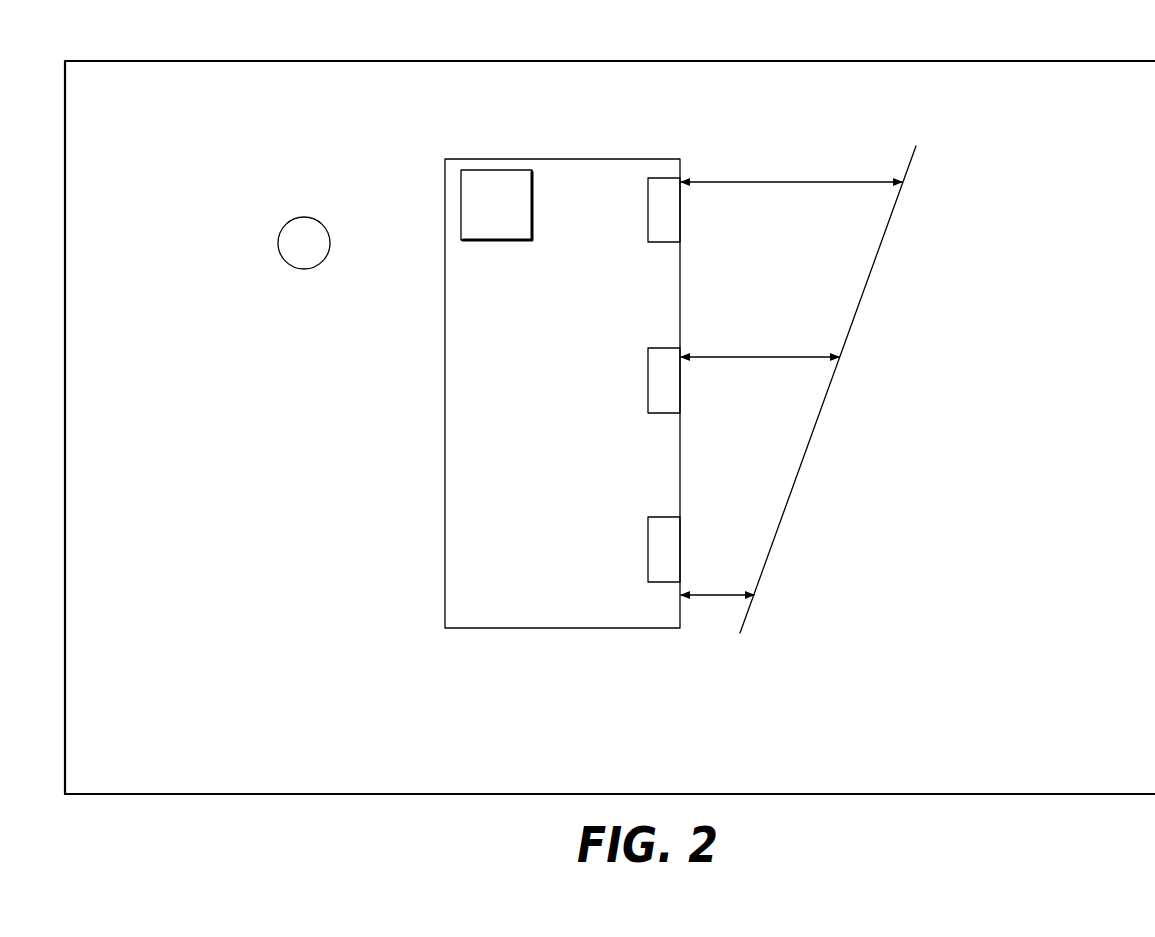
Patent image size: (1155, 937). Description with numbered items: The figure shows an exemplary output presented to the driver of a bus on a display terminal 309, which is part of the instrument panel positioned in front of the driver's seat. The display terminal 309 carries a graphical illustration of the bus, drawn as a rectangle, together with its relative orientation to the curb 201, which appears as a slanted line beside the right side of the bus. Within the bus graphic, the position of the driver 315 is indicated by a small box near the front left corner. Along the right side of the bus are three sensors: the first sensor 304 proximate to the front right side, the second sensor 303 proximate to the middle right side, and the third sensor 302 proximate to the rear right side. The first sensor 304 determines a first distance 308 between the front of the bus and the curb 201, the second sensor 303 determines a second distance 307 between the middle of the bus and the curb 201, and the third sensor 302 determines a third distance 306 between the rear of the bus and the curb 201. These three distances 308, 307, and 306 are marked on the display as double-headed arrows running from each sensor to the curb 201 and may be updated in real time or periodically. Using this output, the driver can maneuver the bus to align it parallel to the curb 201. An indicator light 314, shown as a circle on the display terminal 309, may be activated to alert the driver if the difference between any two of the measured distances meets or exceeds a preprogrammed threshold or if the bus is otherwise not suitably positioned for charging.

The curb 201 is at (815, 430).
The third sensor 302 is at (648, 553).
The second sensor 303 is at (648, 383).
The first sensor 304 is at (648, 197).
The third distance 306 is at (717, 593).
The second distance 307 is at (745, 359).
The first distance 308 is at (791, 184).
The display terminal 309 is at (804, 61).
The indicator light 314 is at (278, 243).
The driver 315 is at (496, 205).